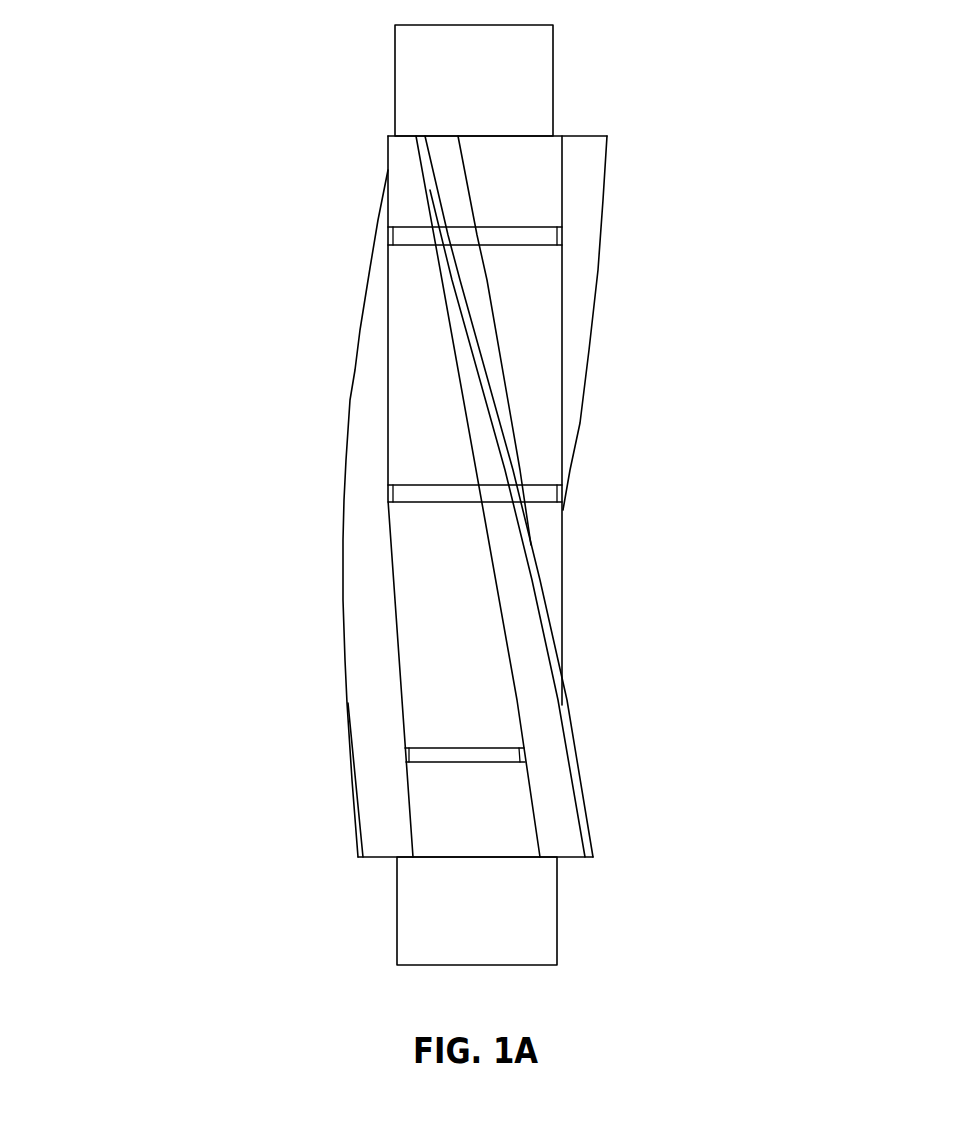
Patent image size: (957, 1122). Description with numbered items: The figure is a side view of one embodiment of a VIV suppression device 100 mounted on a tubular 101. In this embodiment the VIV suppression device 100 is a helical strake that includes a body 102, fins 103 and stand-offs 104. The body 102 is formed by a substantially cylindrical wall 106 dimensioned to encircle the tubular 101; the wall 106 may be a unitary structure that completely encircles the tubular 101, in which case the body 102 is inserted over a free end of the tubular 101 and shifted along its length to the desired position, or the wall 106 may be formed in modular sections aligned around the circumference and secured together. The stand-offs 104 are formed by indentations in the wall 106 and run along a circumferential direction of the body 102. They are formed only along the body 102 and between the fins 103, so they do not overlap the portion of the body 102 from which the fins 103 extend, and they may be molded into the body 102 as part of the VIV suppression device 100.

The VIV suppression device 100 is at (637, 232).
The tubular 101 is at (390, 72).
The body 102 is at (548, 147).
The fins 103 is at (338, 448).
The stand-offs 104 is at (408, 234).
The wall 106 is at (407, 130).